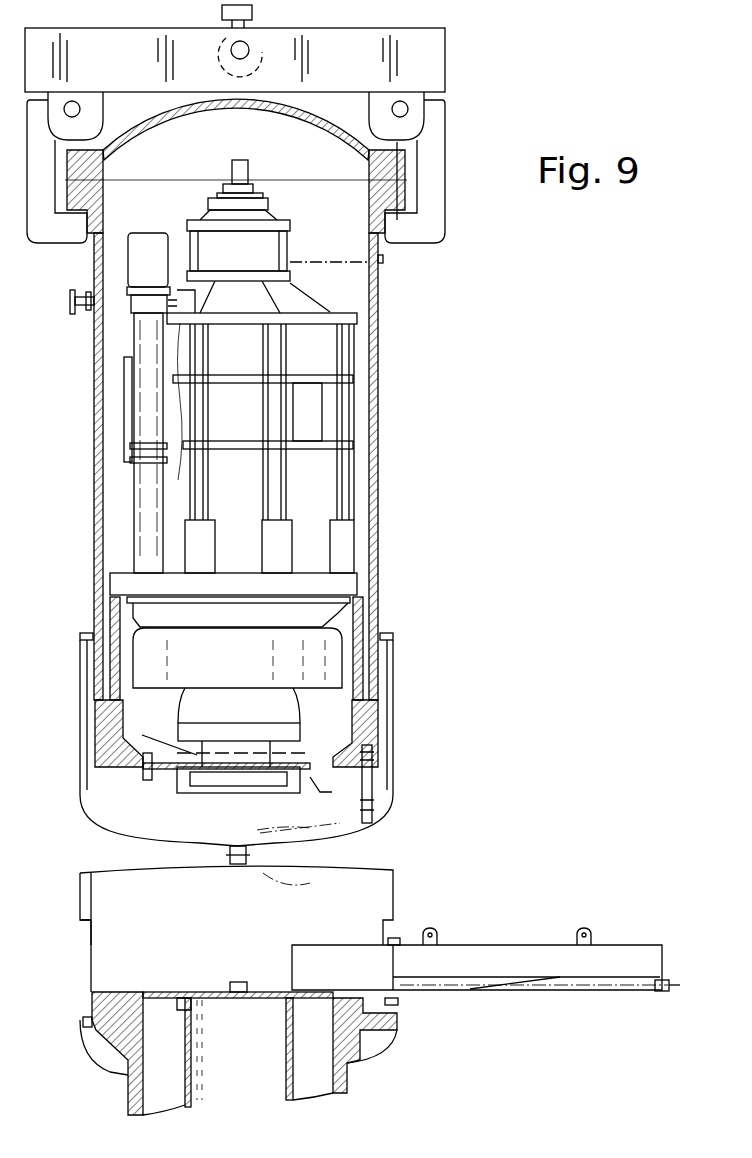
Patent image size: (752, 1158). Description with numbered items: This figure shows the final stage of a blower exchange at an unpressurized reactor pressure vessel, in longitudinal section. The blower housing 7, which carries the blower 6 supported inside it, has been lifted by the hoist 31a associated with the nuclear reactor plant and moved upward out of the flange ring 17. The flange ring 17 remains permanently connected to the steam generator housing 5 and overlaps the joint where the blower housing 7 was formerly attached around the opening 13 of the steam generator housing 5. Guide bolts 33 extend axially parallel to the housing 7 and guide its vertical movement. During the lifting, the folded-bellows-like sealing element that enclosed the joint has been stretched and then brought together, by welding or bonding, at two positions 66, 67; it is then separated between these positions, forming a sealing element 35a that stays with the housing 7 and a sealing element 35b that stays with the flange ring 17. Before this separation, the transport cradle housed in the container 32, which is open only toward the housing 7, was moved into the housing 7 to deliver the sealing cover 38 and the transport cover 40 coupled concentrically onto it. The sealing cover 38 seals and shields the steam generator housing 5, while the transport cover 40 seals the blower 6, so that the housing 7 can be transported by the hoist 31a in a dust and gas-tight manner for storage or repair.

The hoist 31a is at (430, 62).
The blower housing 7 is at (378, 407).
The blower 6 is at (368, 483).
The guide bolts 33 is at (388, 743).
The position 66 is at (375, 815).
The sealing element 35a is at (393, 660).
The transport cover 40 is at (332, 790).
The position 67 is at (397, 857).
The sealing element 35b is at (393, 900).
The flange ring 17 is at (90, 963).
The container 32 is at (648, 927).
The steam generator housing 5 is at (206, 1048).
The sealing cover 38 is at (401, 1045).
The opening 13 is at (217, 1072).